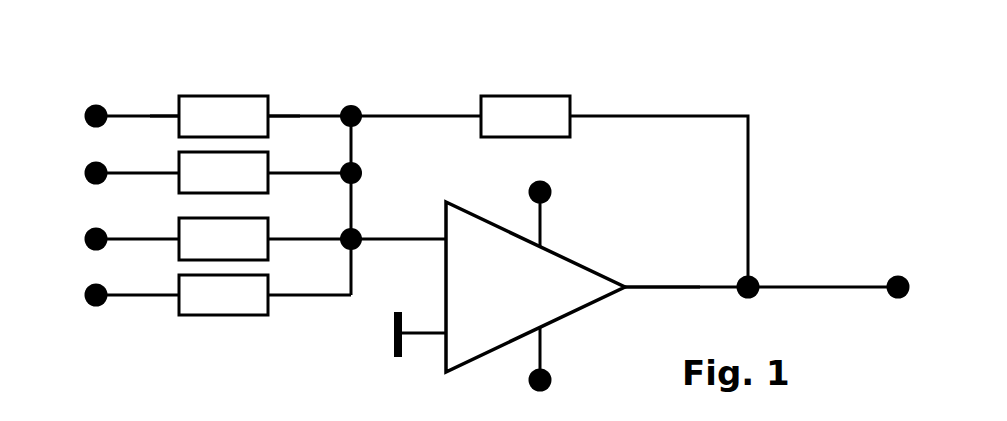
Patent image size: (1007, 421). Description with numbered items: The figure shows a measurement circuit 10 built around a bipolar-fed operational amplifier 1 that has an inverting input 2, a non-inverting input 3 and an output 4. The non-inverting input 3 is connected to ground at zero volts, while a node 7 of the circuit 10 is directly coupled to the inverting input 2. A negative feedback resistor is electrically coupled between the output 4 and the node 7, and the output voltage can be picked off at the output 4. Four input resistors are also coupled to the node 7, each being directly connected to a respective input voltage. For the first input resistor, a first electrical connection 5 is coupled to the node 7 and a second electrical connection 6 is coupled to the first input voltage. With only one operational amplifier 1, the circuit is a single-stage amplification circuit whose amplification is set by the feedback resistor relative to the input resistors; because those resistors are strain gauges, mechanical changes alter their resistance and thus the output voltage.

The operational amplifier 1 is at (589, 250).
The inverting input 2 is at (438, 216).
The non-inverting input 3 is at (438, 316).
The output 4 is at (639, 278).
The first electrical connection 5 is at (281, 110).
The second electrical connection 6 is at (173, 103).
The node 7 is at (356, 86).
The measurement circuit 10 is at (801, 75).